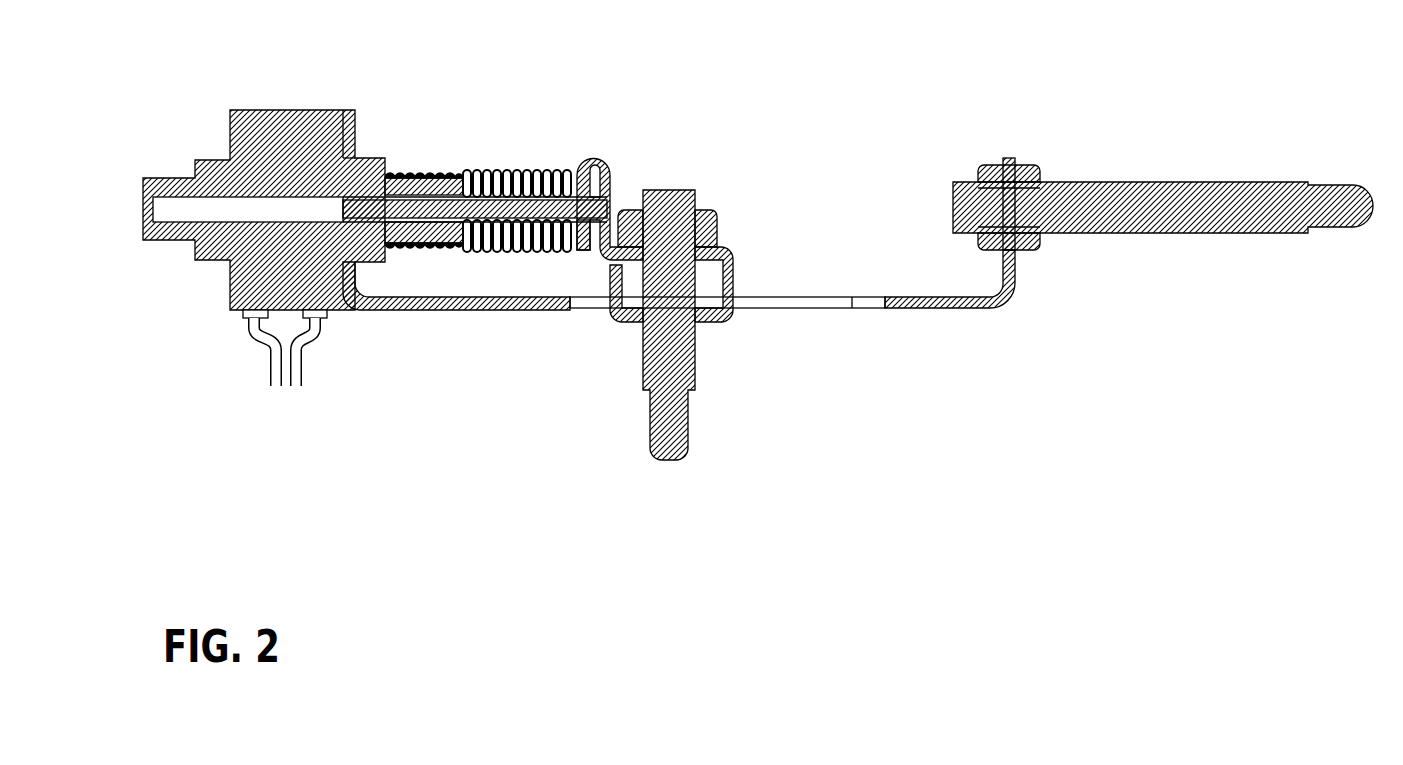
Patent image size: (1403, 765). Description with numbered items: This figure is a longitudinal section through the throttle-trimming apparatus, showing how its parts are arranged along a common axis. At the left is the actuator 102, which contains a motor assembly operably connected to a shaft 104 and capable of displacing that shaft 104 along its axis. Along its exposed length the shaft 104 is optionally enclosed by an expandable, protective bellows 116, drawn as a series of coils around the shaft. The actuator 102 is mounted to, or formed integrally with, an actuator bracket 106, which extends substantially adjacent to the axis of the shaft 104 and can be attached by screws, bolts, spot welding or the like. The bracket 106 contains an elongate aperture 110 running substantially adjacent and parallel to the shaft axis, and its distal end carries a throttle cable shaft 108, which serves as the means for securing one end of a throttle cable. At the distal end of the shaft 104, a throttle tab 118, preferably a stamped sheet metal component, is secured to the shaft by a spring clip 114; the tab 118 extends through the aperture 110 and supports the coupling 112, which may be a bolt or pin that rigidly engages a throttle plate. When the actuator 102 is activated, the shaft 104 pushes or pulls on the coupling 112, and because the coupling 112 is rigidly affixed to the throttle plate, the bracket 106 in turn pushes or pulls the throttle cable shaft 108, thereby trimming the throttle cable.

The actuator 102 is at (283, 112).
The shaft 104 is at (595, 207).
The actuator bracket 106 is at (435, 300).
The throttle cable shaft 108 is at (1102, 192).
The elongate aperture 110 is at (772, 303).
The coupling 112 is at (675, 415).
The spring clip 114 is at (586, 222).
The protective bellows 116 is at (477, 172).
The throttle tab 118 is at (592, 165).